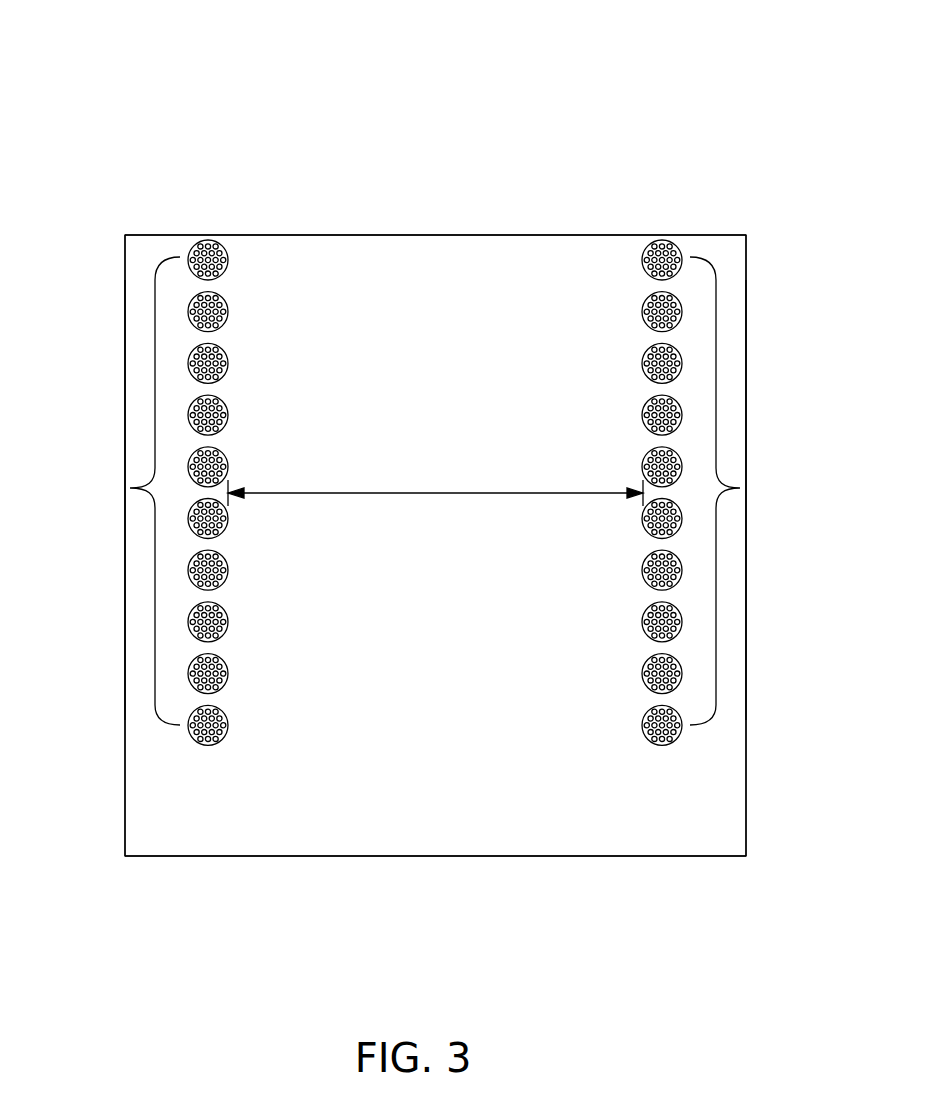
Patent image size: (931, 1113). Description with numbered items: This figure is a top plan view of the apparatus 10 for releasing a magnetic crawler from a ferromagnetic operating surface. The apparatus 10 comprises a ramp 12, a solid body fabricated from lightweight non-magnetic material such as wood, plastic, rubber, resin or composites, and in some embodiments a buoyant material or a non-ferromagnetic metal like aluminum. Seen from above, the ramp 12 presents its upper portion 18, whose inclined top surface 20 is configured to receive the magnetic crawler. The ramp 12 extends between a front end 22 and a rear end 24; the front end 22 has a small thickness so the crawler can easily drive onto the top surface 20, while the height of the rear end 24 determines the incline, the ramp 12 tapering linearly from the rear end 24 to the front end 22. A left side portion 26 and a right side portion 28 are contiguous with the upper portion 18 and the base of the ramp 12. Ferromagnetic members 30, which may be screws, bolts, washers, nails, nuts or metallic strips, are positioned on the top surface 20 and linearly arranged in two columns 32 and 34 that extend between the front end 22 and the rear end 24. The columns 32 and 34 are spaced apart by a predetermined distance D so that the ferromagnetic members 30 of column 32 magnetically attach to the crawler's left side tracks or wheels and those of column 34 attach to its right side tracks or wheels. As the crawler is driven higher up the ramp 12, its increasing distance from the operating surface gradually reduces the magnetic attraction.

The apparatus 10 is at (237, 90).
The ramp 12 is at (700, 840).
The upper portion 18 is at (185, 840).
The top surface 20 is at (514, 258).
The front end 22 is at (410, 856).
The rear end 24 is at (333, 235).
The left side portion 26 is at (746, 626).
The right side portion 28 is at (124, 626).
The ferromagnetic members 30 is at (228, 262).
The column 32 is at (130, 488).
The column 34 is at (740, 488).
The predetermined distance D is at (435, 493).